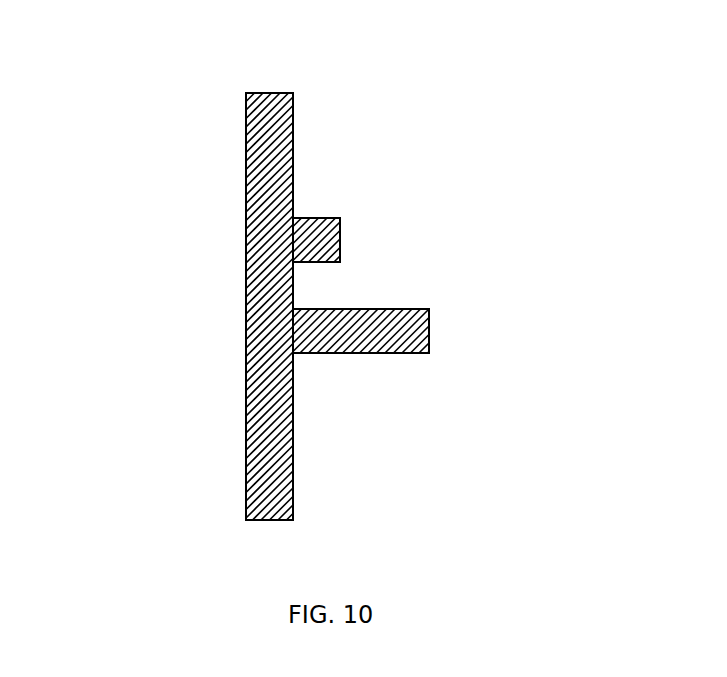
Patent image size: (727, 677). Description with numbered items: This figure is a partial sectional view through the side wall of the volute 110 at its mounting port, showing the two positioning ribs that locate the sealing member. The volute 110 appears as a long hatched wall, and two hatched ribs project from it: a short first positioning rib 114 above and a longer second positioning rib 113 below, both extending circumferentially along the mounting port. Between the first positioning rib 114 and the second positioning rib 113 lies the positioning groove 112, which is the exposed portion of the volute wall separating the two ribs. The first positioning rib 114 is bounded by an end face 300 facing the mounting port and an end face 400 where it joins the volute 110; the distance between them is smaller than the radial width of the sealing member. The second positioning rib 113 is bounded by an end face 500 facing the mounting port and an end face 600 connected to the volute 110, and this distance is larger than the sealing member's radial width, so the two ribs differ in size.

The volute 110 is at (247, 280).
The positioning groove 112 is at (302, 289).
The second positioning rib 113 is at (368, 355).
The first positioning rib 114 is at (312, 218).
The end face of the first positioning rib facing the mounting port 300 is at (340, 240).
The end face of the first positioning rib connected to the volute 400 is at (283, 230).
The end face of the second positioning rib facing the mounting port 500 is at (429, 332).
The end face of the second positioning rib connected to the volute 600 is at (293, 333).